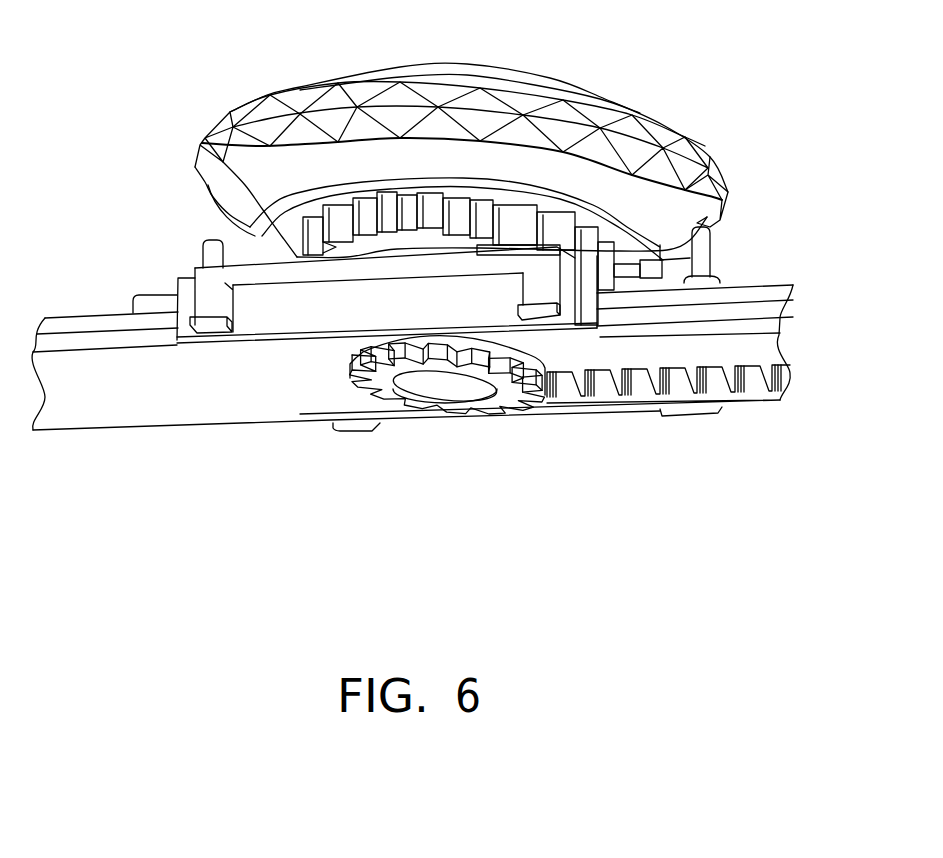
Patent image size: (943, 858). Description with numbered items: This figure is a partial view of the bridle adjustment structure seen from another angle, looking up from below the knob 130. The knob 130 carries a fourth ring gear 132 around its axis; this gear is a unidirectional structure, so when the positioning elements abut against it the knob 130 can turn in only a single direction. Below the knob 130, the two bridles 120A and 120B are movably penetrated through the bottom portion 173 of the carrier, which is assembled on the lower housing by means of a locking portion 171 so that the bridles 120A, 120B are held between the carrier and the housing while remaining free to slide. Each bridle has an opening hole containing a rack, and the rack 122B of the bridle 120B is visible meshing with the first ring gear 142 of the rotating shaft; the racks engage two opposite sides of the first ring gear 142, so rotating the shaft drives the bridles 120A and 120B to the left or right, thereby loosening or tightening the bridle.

The knob 130 is at (663, 130).
The fourth ring gear 132 is at (321, 218).
The locking portion 171 is at (205, 292).
The bottom portion 173 is at (260, 313).
The bridle 120A is at (742, 297).
The bridle 120B is at (98, 405).
The first ring gear 142 is at (347, 369).
The rack 122B is at (753, 387).